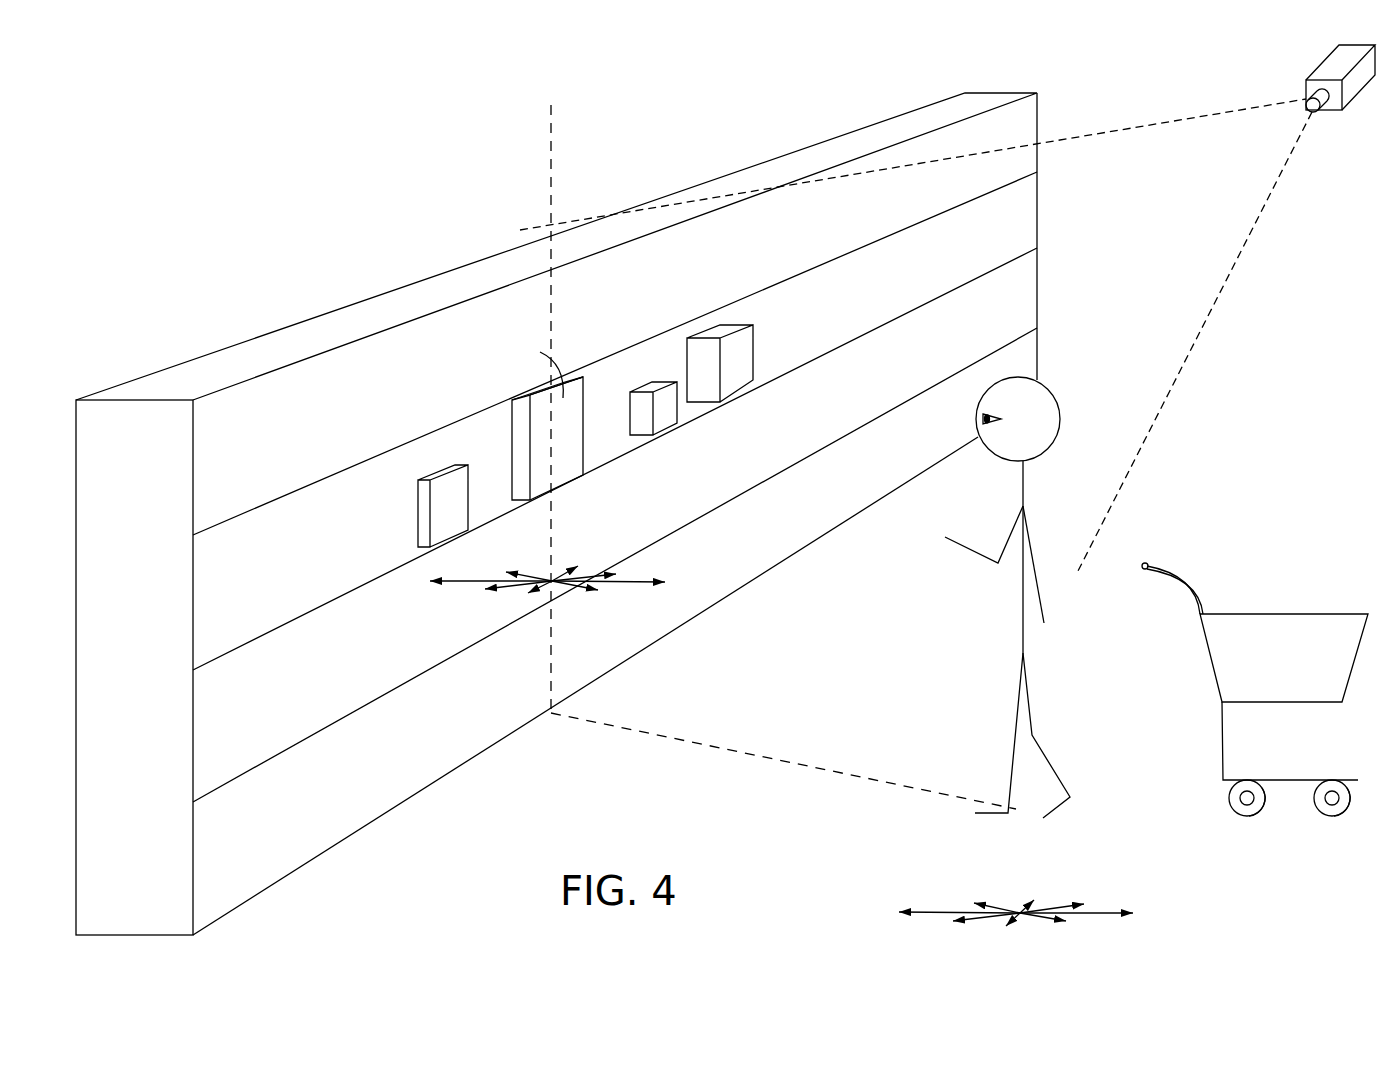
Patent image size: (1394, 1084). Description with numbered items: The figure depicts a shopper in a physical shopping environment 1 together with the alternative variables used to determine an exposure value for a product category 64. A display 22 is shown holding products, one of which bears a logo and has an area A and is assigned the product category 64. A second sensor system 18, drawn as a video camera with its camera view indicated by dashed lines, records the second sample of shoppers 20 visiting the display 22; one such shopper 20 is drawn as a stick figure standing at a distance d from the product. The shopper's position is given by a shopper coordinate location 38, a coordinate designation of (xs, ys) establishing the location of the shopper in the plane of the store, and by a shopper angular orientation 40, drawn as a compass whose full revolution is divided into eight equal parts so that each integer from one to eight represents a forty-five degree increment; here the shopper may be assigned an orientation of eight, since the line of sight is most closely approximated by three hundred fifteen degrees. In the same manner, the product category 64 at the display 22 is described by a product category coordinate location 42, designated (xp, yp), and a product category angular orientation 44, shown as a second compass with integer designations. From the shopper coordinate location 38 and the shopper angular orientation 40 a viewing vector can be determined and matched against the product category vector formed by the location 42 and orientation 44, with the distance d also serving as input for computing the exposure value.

The physical shopping environment 1 is at (735, 504).
The second sensor system 18 is at (1357, 79).
The second sample of shoppers 20 is at (1042, 405).
The display 22 is at (371, 416).
The shopper coordinate location 38 is at (1062, 850).
The shopper angular orientation 40 is at (1020, 920).
The product category coordinate location 42 is at (585, 523).
The product category angular orientation 44 is at (552, 585).
The product category 64 is at (512, 457).